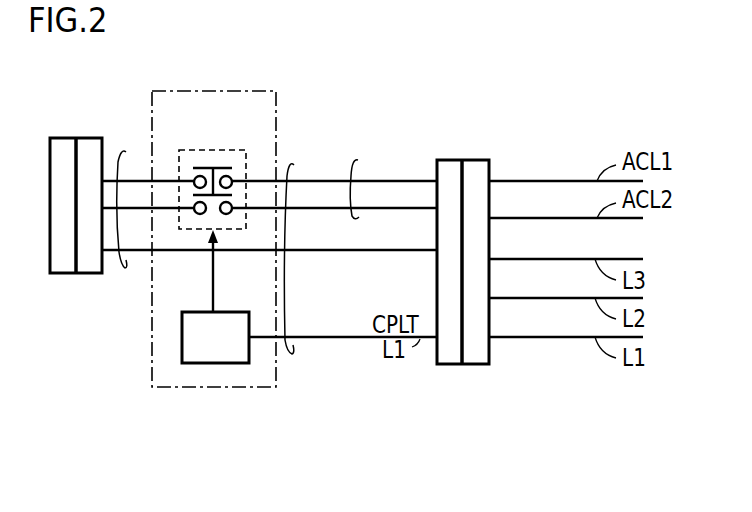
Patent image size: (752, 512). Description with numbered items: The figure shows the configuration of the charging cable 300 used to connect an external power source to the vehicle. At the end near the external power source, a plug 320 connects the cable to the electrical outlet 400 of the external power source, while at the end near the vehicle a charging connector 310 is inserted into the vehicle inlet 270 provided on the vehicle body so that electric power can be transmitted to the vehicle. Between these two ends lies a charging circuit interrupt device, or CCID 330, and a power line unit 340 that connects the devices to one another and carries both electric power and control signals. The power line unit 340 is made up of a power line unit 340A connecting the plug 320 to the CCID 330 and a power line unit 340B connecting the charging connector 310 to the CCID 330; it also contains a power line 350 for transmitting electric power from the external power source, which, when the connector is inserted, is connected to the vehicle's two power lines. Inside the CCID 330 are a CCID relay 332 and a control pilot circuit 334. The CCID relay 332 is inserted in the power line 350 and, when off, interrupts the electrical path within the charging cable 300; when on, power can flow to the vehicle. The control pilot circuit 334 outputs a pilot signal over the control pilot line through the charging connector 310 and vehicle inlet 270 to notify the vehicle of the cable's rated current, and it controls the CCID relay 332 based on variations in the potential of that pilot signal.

The charging cable 300 is at (460, 30).
The charging connector 310 is at (463, 233).
The plug 320 is at (79, 179).
The charging circuit interrupt device (CCID) 330 is at (227, 221).
The CCID relay 332 is at (212, 161).
The control pilot circuit 334 is at (228, 296).
The power line 350 is at (345, 168).
The power line unit 340 is at (269, 337).
The power line unit 340A is at (102, 292).
The power line unit 340B is at (296, 306).
The vehicle inlet 270 is at (476, 391).
The electrical outlet 400 is at (58, 300).